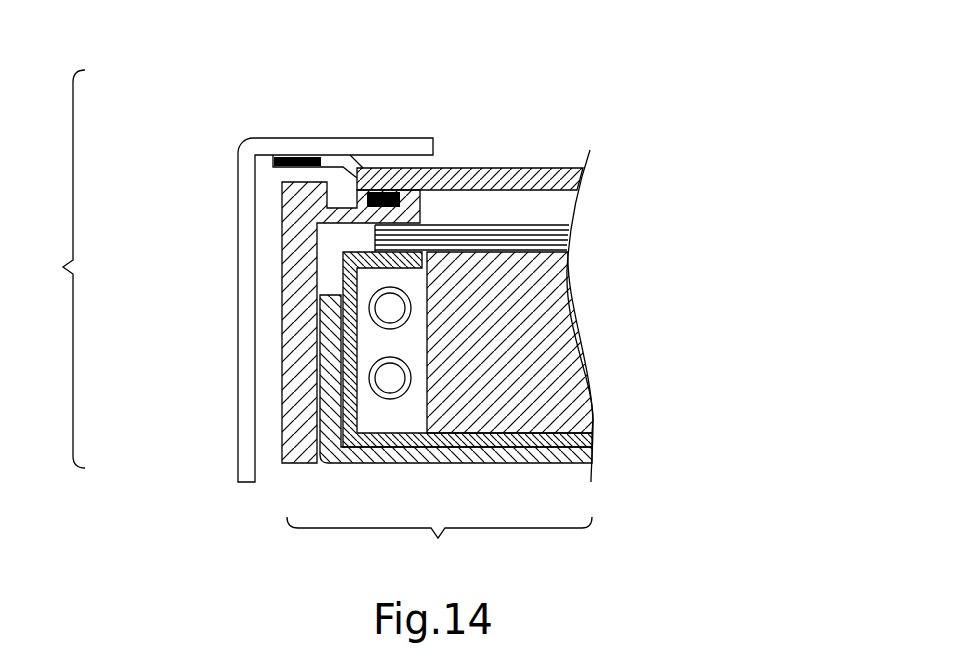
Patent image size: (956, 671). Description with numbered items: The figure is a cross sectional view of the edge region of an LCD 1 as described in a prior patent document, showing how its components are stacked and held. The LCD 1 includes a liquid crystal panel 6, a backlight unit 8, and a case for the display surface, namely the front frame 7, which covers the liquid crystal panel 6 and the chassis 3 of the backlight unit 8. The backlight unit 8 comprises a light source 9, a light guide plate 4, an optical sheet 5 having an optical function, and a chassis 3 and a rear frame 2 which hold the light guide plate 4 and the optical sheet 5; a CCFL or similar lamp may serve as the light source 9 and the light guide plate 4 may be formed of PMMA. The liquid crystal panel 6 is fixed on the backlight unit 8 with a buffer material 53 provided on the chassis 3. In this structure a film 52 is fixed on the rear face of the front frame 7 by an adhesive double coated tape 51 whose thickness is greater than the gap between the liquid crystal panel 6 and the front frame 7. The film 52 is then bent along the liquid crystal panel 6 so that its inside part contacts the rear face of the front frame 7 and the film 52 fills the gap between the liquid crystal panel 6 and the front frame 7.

The LCD 1 is at (58, 269).
The rear frame 2 is at (590, 453).
The chassis 3 is at (297, 462).
The light guide plate 4 is at (560, 317).
The optical sheet 5 is at (560, 224).
The liquid crystal panel 6 is at (557, 167).
The front frame 7 is at (378, 152).
The backlight unit 8 is at (439, 413).
The light source 9 is at (393, 378).
The adhesive double coated tape 51 is at (292, 157).
The film 52 is at (346, 168).
The buffer material 53 is at (366, 196).